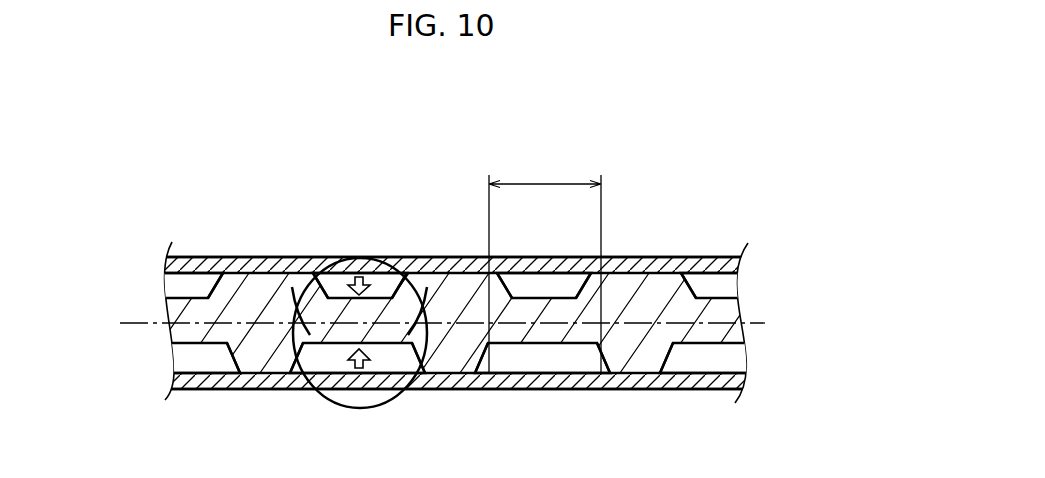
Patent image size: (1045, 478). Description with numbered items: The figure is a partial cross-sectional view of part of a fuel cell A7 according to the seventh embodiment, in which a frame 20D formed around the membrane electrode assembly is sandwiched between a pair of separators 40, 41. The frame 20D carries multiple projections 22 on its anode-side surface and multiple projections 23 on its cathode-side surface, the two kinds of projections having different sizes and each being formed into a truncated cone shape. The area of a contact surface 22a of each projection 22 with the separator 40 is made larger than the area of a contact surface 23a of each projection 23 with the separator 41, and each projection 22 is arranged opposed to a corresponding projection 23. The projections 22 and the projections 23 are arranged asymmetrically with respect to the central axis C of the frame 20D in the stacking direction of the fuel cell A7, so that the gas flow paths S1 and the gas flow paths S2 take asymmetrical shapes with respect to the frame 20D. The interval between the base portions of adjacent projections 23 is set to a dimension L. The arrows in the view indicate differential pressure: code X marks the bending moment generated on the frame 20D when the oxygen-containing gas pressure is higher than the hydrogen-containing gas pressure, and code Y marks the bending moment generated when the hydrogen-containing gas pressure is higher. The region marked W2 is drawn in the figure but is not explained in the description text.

The fuel cell A7 is at (160, 213).
The frame 20D is at (168, 312).
The projection 22 is at (272, 257).
The contact surface 22a is at (240, 257).
The projection 23 is at (250, 389).
The contact surface 23a is at (277, 389).
The separator 40 is at (198, 257).
The separator 41 is at (201, 389).
The gas flow path S1 is at (713, 257).
The gas flow path S2 is at (715, 389).
The central axis C is at (453, 324).
The dimension L is at (545, 265).
The width region W2 is at (359, 279).
The bending moment X is at (333, 257).
The bending moment Y is at (350, 408).